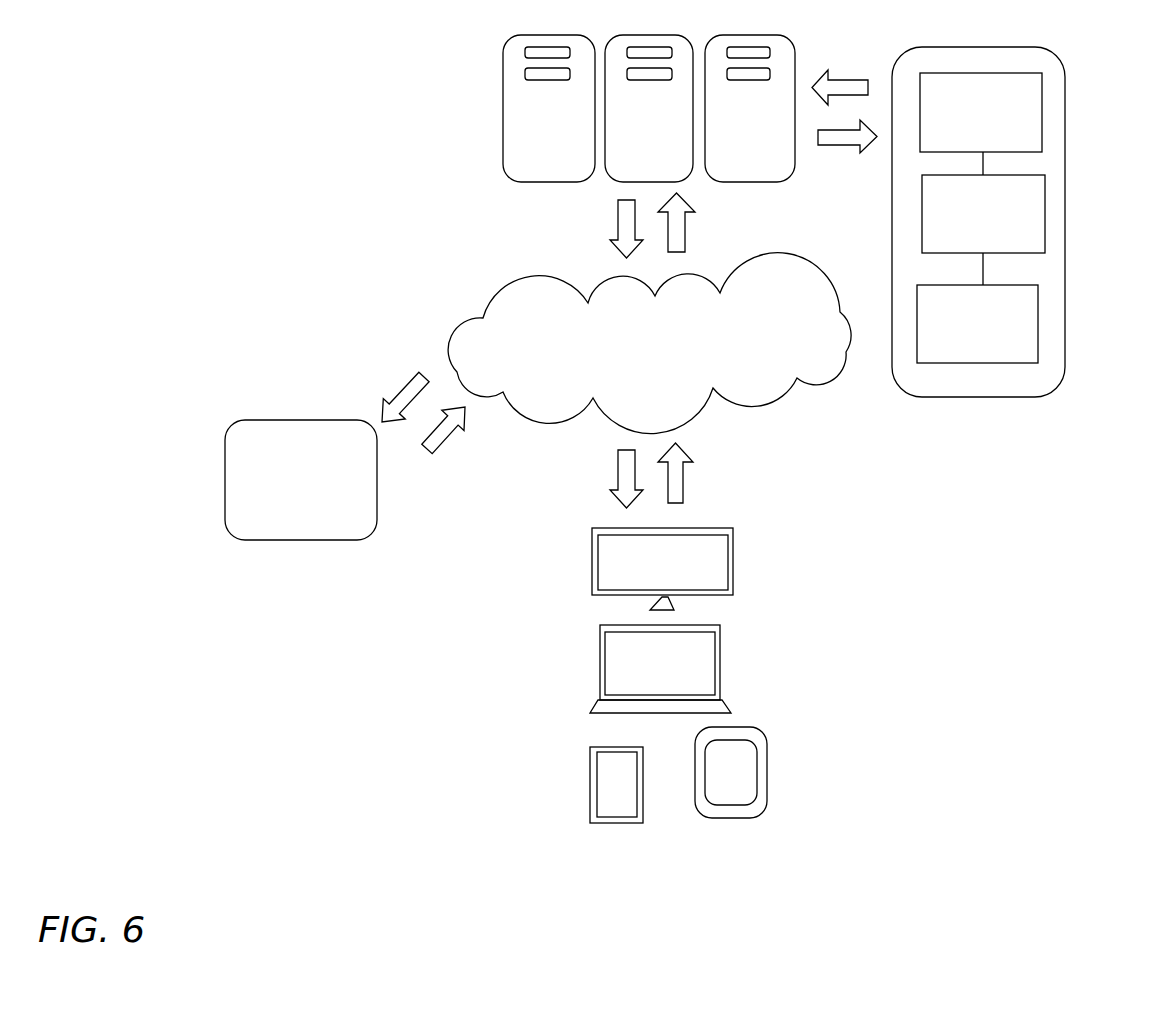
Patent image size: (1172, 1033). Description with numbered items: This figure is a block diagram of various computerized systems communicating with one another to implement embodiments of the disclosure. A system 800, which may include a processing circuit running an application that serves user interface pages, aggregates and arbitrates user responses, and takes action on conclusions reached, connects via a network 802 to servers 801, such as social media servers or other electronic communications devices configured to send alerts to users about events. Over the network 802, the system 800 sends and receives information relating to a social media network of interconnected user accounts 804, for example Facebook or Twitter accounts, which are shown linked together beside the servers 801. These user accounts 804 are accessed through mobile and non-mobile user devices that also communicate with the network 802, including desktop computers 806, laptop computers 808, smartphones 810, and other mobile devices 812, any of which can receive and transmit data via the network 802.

The system 800 is at (338, 533).
The servers 801 is at (485, 37).
The network 802 is at (522, 310).
The user accounts 804 is at (1070, 73).
The desktop computers 806 is at (713, 568).
The laptop computers 808 is at (698, 652).
The smartphones 810 is at (748, 765).
The other mobile devices 812 is at (602, 762).